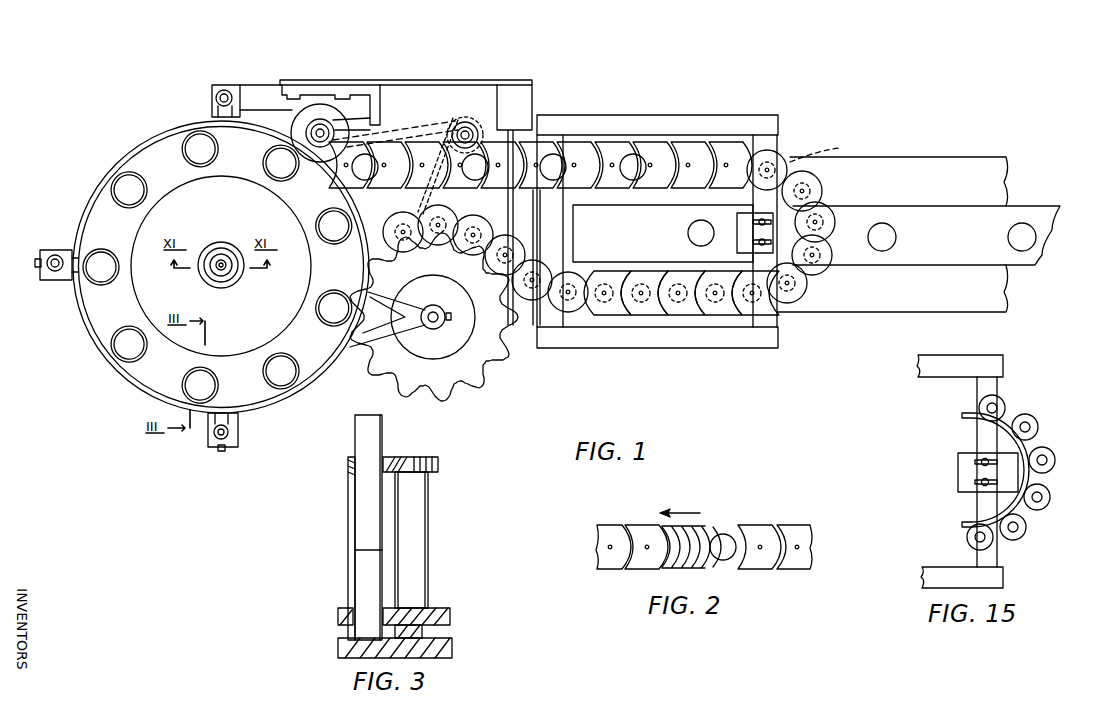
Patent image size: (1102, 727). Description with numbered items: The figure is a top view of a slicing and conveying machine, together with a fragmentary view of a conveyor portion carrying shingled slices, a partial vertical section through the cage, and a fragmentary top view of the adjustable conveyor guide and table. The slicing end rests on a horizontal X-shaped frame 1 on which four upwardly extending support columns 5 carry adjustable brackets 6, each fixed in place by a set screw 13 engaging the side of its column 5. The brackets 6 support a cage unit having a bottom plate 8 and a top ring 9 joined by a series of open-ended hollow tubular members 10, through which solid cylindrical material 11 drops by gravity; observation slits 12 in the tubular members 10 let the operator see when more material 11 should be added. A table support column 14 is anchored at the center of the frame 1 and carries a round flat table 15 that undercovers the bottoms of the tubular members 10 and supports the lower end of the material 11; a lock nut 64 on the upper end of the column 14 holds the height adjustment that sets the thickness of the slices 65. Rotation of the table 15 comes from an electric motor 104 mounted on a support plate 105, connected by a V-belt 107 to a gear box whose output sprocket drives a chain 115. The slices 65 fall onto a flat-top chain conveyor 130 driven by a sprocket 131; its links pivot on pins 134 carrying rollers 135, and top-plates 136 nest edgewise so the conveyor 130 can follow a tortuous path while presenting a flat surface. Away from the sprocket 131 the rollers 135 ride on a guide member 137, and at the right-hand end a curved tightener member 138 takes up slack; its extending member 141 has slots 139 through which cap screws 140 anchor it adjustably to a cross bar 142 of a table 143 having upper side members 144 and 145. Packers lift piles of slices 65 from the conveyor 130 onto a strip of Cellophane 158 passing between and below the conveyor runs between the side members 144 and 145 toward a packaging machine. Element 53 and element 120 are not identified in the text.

In FIG. 1, the X-shaped frame 1 is at (240, 98).
In FIG. 1, the support column 5 is at (224, 90).
In FIG. 1, the adjustable bracket 6 is at (212, 108).
In FIG. 1, the bottom plate 8 is at (104, 336).
In FIG. 3, the bottom plate 8 is at (437, 608).
In FIG. 1, the top ring 9 is at (104, 318).
In FIG. 3, the top ring 9 is at (395, 458).
In FIG. 1, the hollow tubular member 10 is at (117, 178).
In FIG. 3, the hollow tubular member 10 is at (348, 494).
In FIG. 3, the solid material 11 is at (383, 432).
In FIG. 3, the observation slit 12 is at (355, 548).
In FIG. 1, the set screw 13 is at (36, 260).
In FIG. 1, the table support column 14 is at (228, 270).
In FIG. 3, the table 15 is at (338, 648).
In FIG. 1, the center 53 is at (216, 285).
In FIG. 1, the lock nut 64 is at (226, 250).
In FIG. 1, the slice 65 is at (556, 156).
In FIG. 2, the slice 65 is at (725, 536).
In FIG. 1, the electric motor 104 is at (316, 112).
In FIG. 1, the support plate 105 is at (388, 80).
In FIG. 1, the V-belt 107 is at (358, 122).
In FIG. 1, the chain 115 is at (452, 116).
In FIG. 1, the aperture 120 is at (745, 222).
In FIG. 1, the conveyor 130 is at (528, 119).
In FIG. 2, the conveyor 130 is at (785, 505).
In FIG. 1, the sprocket 131 is at (468, 375).
In FIG. 1, the pin 134 is at (828, 150).
In FIG. 15, the roller 135 is at (1002, 400).
In FIG. 1, the top-plate 136 is at (775, 168).
In FIG. 1, the guide member 137 is at (520, 258).
In FIG. 15, the guide member 137 is at (1040, 480).
In FIG. 15, the curved tightener member 138 is at (1020, 413).
In FIG. 1, the slot 139 is at (750, 246).
In FIG. 15, the slot 139 is at (978, 482).
In FIG. 15, the cap screw 140 is at (985, 458).
In FIG. 1, the extending member 141 is at (740, 240).
In FIG. 15, the extending member 141 is at (958, 468).
In FIG. 1, the cross bar 142 is at (790, 315).
In FIG. 15, the cross bar 142 is at (978, 556).
In FIG. 15, the table 143 is at (998, 346).
In FIG. 1, the upper side member 144 is at (738, 114).
In FIG. 15, the upper side member 144 is at (965, 356).
In FIG. 1, the upper side member 145 is at (580, 340).
In FIG. 15, the upper side member 145 is at (918, 575).
In FIG. 1, the strip of Cellophane 158 is at (956, 220).